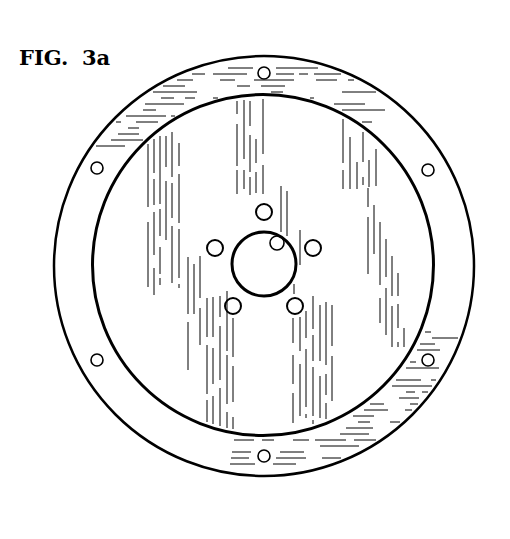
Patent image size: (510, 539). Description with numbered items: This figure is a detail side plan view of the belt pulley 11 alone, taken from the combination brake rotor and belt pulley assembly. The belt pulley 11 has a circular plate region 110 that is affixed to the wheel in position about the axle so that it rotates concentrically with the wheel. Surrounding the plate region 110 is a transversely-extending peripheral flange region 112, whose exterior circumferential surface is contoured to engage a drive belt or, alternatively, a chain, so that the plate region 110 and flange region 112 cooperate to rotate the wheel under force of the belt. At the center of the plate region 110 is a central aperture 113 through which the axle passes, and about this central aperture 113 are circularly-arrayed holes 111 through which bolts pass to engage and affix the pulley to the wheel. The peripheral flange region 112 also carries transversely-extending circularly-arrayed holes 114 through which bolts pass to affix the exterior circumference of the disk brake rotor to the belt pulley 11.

The belt pulley 11 is at (388, 170).
The circular plate region 110 is at (172, 330).
The circularly-arrayed holes 111 is at (322, 250).
The transversely-extending peripheral flange region 112 is at (390, 97).
The central aperture 113 is at (283, 240).
The transversely-extending circularly-arrayed holes 114 is at (260, 67).